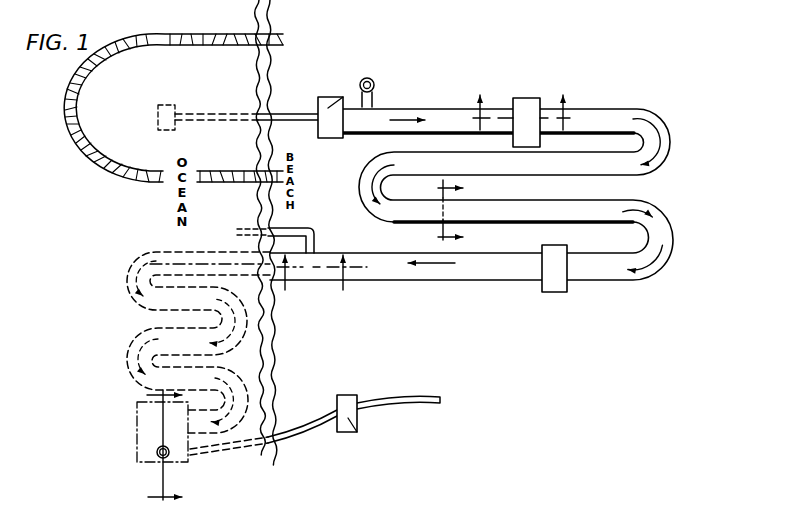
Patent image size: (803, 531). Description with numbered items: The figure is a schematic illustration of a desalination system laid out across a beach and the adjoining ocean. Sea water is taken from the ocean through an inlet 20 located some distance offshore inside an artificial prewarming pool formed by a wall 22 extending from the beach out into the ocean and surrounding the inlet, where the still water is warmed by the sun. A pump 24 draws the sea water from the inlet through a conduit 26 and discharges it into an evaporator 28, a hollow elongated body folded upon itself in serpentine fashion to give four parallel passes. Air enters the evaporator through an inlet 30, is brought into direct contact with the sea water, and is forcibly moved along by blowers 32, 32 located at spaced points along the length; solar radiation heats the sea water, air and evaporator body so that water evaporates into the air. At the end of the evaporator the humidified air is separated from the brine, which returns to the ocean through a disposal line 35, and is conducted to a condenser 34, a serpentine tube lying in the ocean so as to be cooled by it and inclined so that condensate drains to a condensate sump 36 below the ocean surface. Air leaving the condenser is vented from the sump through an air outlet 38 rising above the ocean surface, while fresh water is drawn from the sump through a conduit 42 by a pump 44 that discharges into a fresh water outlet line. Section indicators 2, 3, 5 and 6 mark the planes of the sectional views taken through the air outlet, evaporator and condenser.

The inlet 20 is at (158, 113).
The wall 22 is at (77, 97).
The pump 24 is at (358, 58).
The conduit 26 is at (273, 114).
The evaporator 28 is at (612, 102).
The inlet 30 is at (375, 100).
The blowers 32 is at (492, 42).
The condenser 34 is at (130, 264).
The disposal line 35 is at (312, 229).
The condensate sump 36 is at (137, 425).
The air outlet 38 is at (158, 450).
The conduit 42 is at (280, 434).
The pump 44 is at (342, 395).
The section line 2- 2 is at (171, 448).
The section line 3- 3 is at (520, 111).
The section line 5- 5 is at (258, 276).
The section line 6- 6 is at (446, 208).